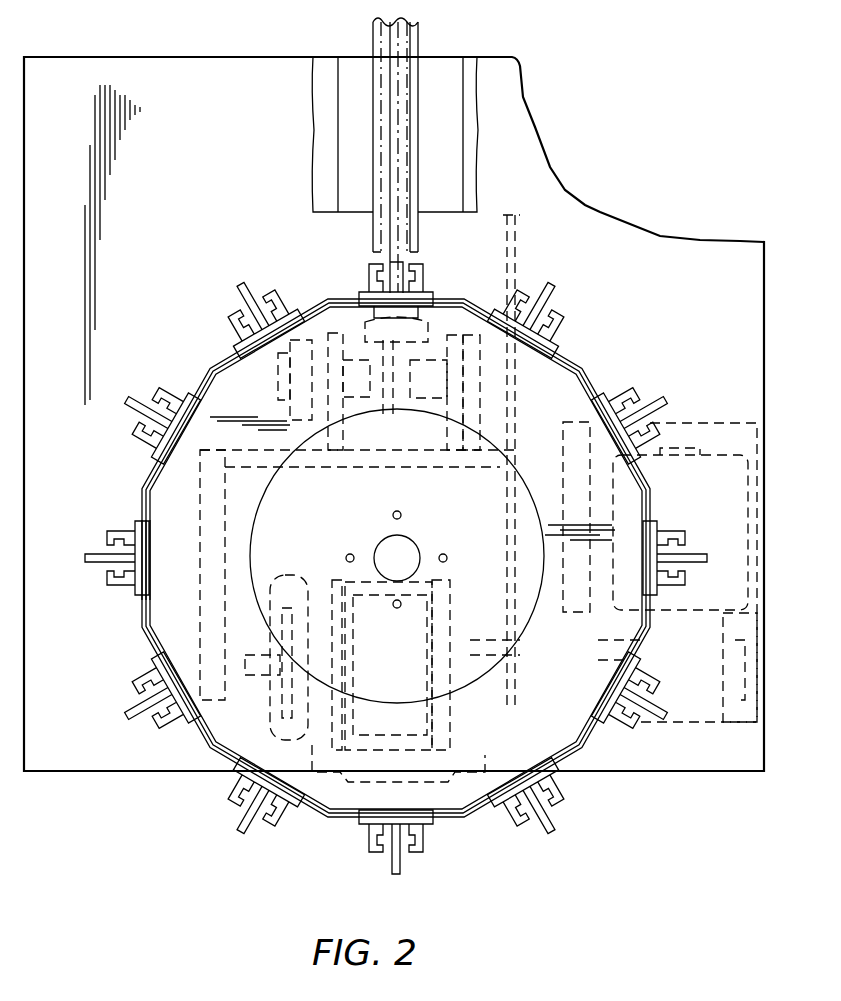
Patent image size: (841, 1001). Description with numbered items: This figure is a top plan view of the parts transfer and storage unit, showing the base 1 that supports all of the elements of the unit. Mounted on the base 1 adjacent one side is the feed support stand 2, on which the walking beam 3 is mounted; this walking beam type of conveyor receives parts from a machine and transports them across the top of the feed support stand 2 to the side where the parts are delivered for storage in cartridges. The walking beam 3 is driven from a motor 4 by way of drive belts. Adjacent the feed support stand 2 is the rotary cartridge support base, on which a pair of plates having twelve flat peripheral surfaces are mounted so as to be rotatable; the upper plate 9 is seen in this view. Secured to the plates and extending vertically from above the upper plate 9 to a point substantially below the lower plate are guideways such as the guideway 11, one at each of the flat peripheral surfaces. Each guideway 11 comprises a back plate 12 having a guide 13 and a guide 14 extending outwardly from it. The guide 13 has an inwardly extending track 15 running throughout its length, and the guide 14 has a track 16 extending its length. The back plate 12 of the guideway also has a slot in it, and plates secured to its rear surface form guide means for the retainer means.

The base 1 is at (735, 330).
The feed support stand 2 is at (445, 180).
The walking beam 3 is at (405, 232).
The motor 4 is at (725, 540).
The upper plate 9 is at (563, 385).
The guideway 11 is at (270, 304).
The back plate 12 is at (143, 565).
The guide 13 is at (138, 588).
The guide 14 is at (125, 530).
The track 15 is at (112, 572).
The track 16 is at (115, 547).